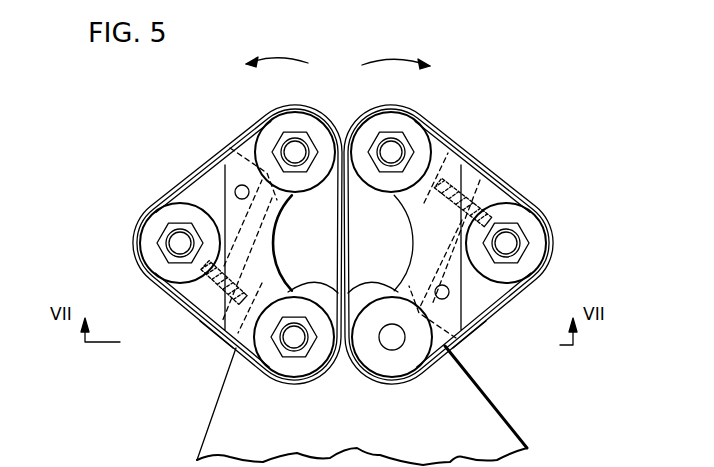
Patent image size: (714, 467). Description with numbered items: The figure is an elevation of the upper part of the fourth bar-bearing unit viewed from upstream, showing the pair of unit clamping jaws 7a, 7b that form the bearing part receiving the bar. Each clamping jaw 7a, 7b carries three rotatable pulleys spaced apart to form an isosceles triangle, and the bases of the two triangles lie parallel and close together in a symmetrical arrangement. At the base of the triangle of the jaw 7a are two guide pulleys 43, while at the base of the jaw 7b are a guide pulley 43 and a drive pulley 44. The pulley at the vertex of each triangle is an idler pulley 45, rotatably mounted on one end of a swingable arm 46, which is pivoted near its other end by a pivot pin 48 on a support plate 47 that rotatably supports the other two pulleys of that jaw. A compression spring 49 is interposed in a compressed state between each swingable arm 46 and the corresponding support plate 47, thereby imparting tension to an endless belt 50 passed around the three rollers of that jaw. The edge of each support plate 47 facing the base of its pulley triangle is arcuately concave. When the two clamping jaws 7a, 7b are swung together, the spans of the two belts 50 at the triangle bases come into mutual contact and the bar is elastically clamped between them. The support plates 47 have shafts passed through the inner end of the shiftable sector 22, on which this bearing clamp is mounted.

The clamping jaw 7a is at (212, 153).
The clamping jaw 7b is at (492, 153).
The shiftable sector 22 is at (210, 440).
The guide pulley 43 is at (317, 122).
The drive pulley 44 is at (391, 368).
The idler pulley 45 is at (158, 265).
The swingable arm 46 is at (203, 200).
The support plate 47 is at (272, 243).
The pivot pin 48 is at (249, 193).
The compression spring 49 is at (228, 312).
The endless belt 50 is at (196, 330).